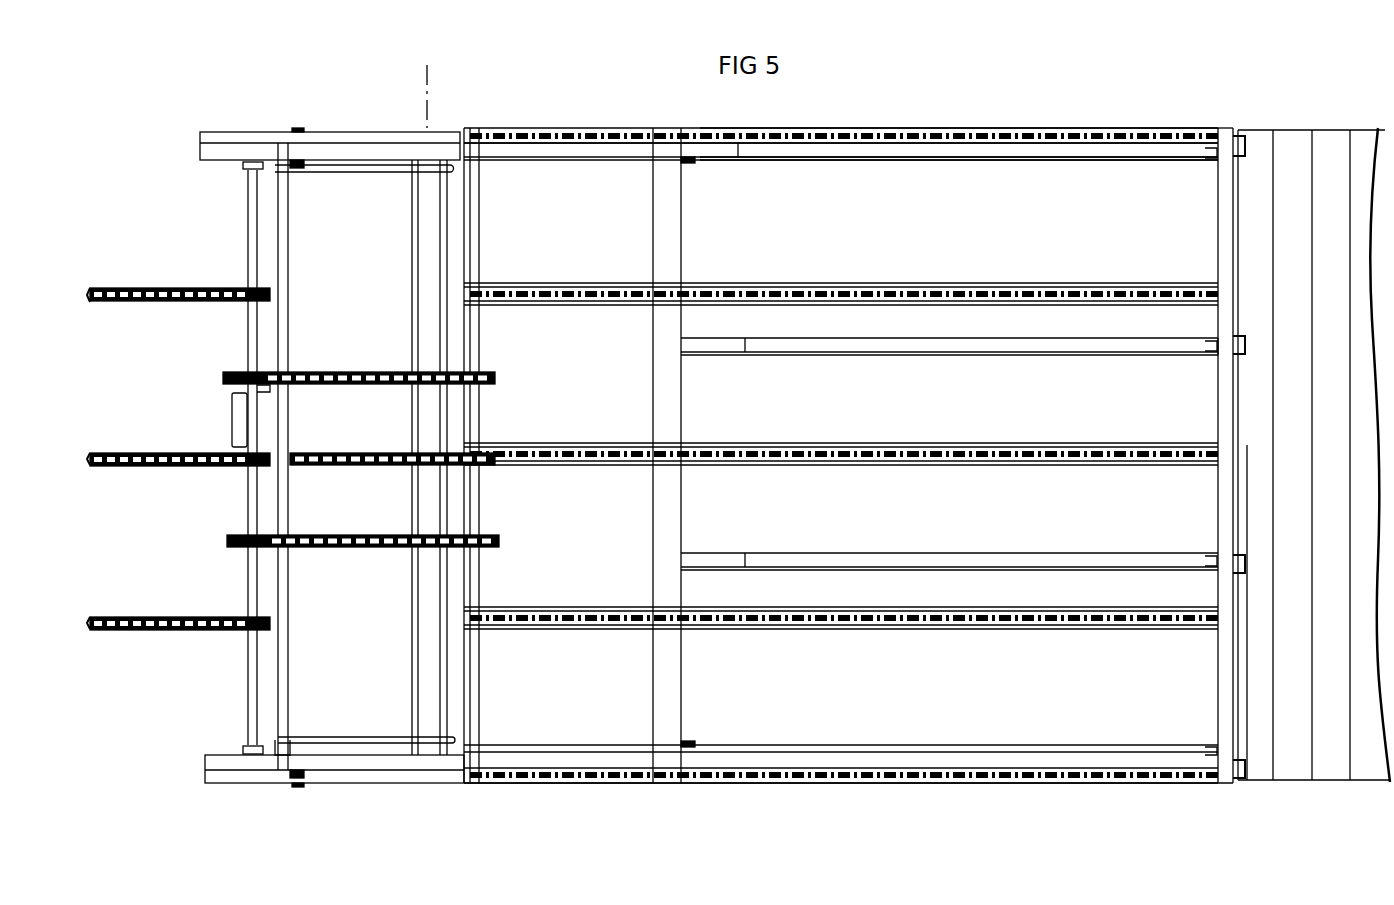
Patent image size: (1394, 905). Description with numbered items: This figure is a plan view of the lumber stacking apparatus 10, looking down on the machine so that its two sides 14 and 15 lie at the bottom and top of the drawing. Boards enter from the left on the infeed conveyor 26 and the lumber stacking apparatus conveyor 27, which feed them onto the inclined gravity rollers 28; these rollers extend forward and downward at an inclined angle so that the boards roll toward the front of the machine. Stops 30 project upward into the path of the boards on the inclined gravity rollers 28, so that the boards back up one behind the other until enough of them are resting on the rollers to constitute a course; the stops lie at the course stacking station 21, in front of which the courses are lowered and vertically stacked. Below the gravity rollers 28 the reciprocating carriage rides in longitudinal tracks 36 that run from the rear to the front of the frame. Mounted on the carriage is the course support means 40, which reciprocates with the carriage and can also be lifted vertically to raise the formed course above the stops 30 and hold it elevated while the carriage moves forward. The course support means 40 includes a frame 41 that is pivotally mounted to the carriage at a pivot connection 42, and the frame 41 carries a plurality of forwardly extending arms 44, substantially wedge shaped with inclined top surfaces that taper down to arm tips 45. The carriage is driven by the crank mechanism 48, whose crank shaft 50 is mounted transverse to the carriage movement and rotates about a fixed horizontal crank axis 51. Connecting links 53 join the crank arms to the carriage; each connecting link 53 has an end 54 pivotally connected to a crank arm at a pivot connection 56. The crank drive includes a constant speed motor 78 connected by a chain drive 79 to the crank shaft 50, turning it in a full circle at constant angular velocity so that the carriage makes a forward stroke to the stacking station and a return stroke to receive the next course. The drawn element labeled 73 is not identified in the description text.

The lumber stacking apparatus 10 is at (646, 786).
The side 14 is at (918, 785).
The side 15 is at (880, 130).
The course stacking station 21 is at (1309, 436).
The infeed conveyor 26 is at (180, 288).
The lumber stacking apparatus conveyor 27 is at (368, 384).
The inclined gravity rollers 28 is at (890, 132).
The stops 30 is at (1242, 140).
The longitudinal tracks 36 is at (420, 786).
The course support means 40 is at (867, 168).
The frame 41 is at (740, 162).
The pivot connection 42 is at (300, 170).
The arms 44 is at (1086, 160).
The arm tips 45 is at (1208, 158).
The crank mechanism 48 is at (352, 172).
The crank shaft 50 is at (422, 246).
The crank axis 51 is at (429, 110).
The connecting links 53 is at (546, 168).
The end 54 is at (262, 168).
The pivot connection 56 is at (285, 736).
The clips 73 is at (686, 165).
The constant speed motor 78 is at (232, 417).
The chain drive 79 is at (343, 452).